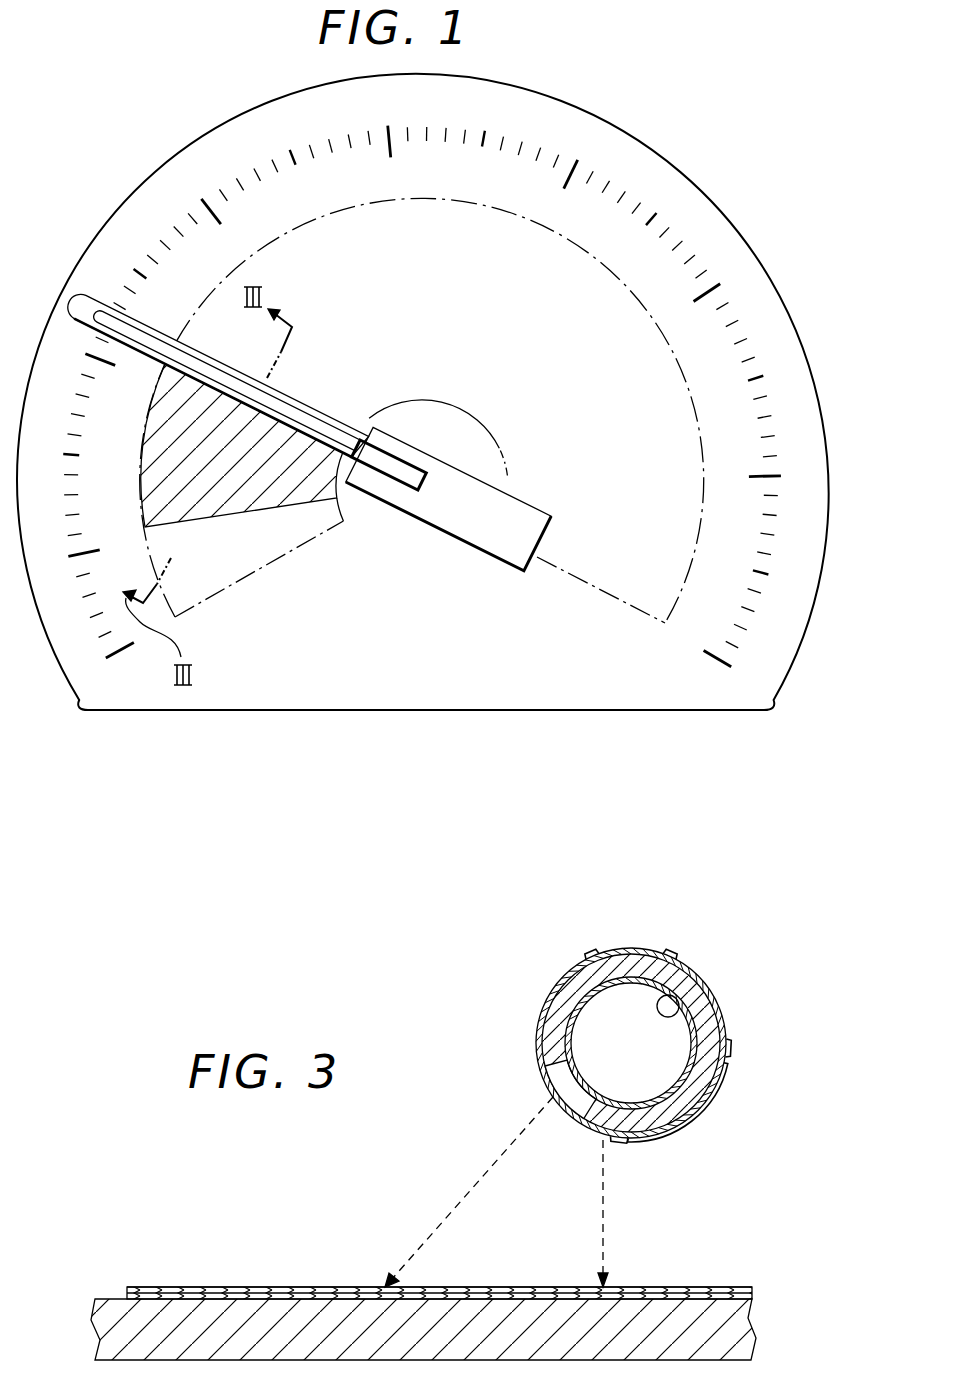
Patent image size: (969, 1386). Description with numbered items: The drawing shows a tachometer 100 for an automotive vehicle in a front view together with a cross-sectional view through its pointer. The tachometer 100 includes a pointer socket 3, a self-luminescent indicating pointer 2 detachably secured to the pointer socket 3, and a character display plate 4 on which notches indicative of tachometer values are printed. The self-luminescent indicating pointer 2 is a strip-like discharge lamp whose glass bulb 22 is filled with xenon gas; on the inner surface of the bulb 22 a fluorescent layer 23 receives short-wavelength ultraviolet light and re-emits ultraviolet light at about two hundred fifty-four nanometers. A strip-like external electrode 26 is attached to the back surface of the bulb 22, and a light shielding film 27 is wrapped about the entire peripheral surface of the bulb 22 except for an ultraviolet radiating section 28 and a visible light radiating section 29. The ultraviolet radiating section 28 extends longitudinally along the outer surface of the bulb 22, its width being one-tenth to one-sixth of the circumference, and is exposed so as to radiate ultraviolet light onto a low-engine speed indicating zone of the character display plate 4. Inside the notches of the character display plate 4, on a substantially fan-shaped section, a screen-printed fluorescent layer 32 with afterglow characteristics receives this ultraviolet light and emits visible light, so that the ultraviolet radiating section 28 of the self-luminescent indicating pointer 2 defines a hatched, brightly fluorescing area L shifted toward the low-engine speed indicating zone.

In FIG. 1, the tachometer 100 is at (659, 145).
In FIG. 1, the character display plate 4 is at (707, 212).
In FIG. 3, the character display plate 4 is at (725, 1287).
In FIG. 1, the fluorescent layer 32 is at (638, 362).
In FIG. 3, the fluorescent layer 32 is at (237, 1287).
In FIG. 1, the brightly fluorescing area L is at (220, 505).
In FIG. 3, the brightly fluorescing area L is at (507, 1287).
In FIG. 1, the pointer socket 3 is at (493, 480).
In FIG. 1, the self-luminescent indicating pointer 2 is at (293, 397).
In FIG. 3, the self-luminescent indicating pointer 2 is at (732, 1006).
In FIG. 1, the visible light radiating section 29 is at (353, 404).
In FIG. 3, the visible light radiating section 29 is at (630, 947).
In FIG. 3, the glass bulb 22 is at (710, 1073).
In FIG. 3, the fluorescent layer 23 is at (672, 998).
In FIG. 3, the external electrode 26 is at (692, 1126).
In FIG. 3, the light shielding film 27 is at (537, 1043).
In FIG. 3, the ultraviolet radiating section 28 is at (570, 1113).